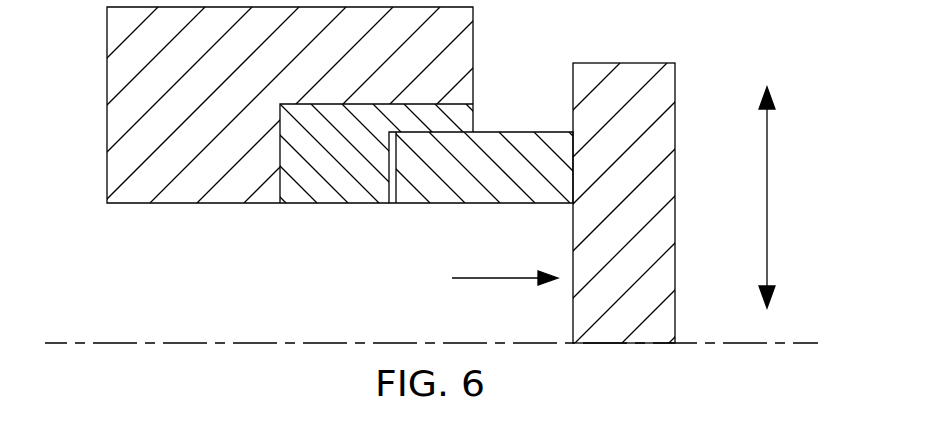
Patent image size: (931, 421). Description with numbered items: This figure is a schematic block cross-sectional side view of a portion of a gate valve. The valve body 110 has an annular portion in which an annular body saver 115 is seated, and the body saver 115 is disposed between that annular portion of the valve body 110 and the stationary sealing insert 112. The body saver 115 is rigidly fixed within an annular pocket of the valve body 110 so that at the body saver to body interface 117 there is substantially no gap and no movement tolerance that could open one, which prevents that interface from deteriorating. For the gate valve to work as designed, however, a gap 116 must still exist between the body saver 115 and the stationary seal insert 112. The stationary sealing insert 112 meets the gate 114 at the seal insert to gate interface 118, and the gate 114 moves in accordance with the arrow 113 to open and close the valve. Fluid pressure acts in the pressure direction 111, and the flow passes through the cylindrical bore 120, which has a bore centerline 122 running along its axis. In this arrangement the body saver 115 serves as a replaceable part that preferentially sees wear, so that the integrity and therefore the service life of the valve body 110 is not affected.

The valve body 110 is at (113, 78).
The pressure direction 111 is at (493, 282).
The stationary sealing insert 112 is at (521, 140).
The arrow 113 is at (767, 197).
The gate 114 is at (668, 133).
The annular body saver 115 is at (307, 196).
The gap 116 is at (389, 190).
The interface 117 is at (280, 156).
The seal insert to gate interface 118 is at (573, 184).
The cylindrical bore 120 is at (247, 318).
The bore centerline 122 is at (806, 340).